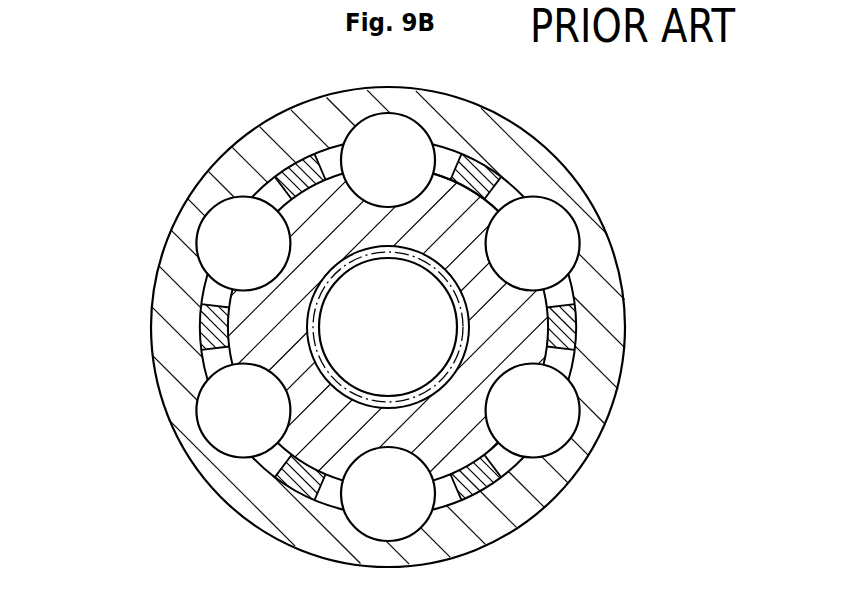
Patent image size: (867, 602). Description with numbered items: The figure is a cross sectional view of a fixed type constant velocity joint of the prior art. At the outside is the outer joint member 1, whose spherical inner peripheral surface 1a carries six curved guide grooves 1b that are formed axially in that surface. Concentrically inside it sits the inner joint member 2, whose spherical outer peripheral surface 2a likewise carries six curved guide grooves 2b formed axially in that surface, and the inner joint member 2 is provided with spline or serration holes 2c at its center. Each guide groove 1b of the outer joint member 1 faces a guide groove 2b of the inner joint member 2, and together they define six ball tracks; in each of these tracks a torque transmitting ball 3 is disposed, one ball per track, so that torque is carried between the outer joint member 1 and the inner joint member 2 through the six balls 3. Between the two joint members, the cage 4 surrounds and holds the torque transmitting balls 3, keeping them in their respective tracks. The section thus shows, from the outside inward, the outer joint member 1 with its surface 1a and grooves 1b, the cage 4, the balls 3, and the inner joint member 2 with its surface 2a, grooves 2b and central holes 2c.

The outer joint member 1 is at (230, 145).
The spherical inner peripheral surface 1a is at (265, 197).
The curved guide grooves 1b is at (205, 243).
The inner joint member 2 is at (466, 194).
The spherical outer peripheral surface 2a is at (480, 212).
The curved guide grooves 2b is at (485, 246).
The spline holes 2c is at (383, 256).
The torque transmitting balls 3 is at (430, 130).
The cage 4 is at (303, 158).